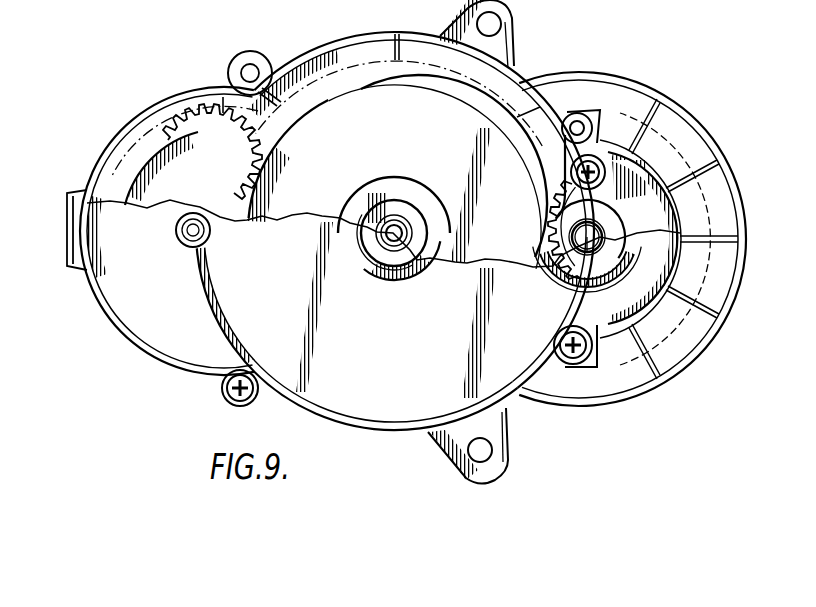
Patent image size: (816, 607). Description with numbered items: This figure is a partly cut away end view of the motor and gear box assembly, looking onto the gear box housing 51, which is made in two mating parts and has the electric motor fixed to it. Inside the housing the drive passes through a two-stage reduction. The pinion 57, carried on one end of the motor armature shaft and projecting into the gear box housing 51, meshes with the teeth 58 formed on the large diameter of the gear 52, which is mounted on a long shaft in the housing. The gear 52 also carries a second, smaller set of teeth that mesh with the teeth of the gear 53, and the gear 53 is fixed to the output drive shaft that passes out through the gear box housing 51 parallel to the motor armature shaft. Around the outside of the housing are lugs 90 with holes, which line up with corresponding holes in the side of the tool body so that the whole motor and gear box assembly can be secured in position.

The gear box housing 51 is at (418, 349).
The gear 52 is at (345, 185).
The gear 53 is at (216, 184).
The pinion 57 is at (587, 244).
The teeth 58 is at (560, 256).
The lugs 90 is at (501, 30).